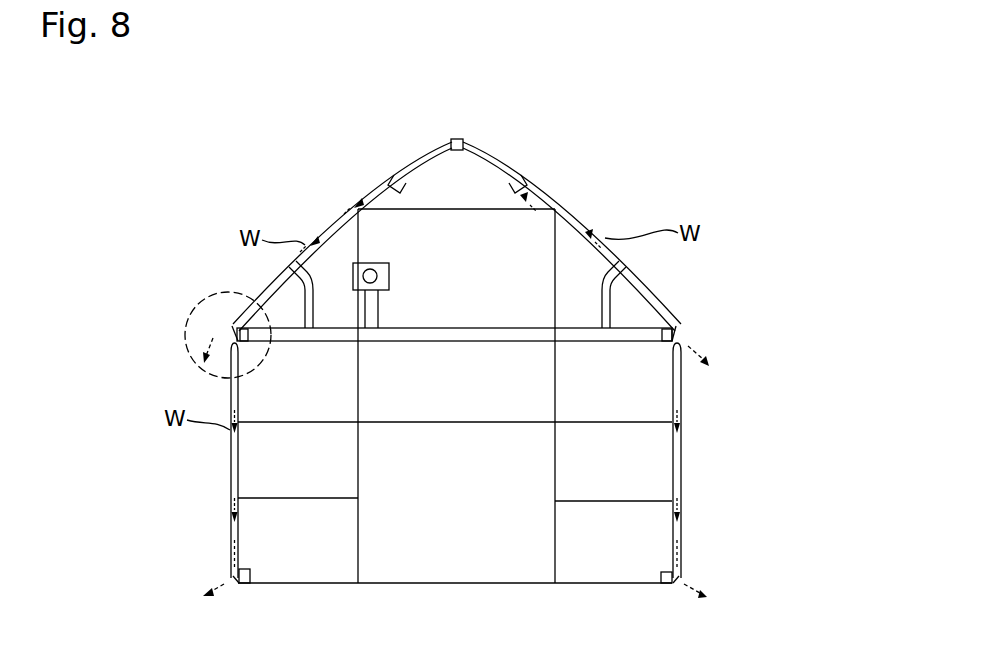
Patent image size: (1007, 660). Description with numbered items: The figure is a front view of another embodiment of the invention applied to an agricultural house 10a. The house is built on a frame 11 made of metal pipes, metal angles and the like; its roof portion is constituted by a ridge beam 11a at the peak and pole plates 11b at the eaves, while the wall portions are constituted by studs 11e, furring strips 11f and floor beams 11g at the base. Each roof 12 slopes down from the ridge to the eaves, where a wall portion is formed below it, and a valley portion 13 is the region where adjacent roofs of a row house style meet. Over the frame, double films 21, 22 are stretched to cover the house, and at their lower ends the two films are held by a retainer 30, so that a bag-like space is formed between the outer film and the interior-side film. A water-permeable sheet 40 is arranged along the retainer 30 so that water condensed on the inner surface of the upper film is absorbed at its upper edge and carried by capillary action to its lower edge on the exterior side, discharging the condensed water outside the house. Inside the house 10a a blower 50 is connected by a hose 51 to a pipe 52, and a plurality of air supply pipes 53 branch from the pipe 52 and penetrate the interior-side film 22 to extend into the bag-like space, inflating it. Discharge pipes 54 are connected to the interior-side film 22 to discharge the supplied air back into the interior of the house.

The agricultural house 10a is at (246, 205).
The frame 11 is at (539, 480).
The ridge beam 11a is at (457, 138).
The pole plate 11b is at (252, 343).
The stud 11e is at (360, 522).
The furring strip 11f is at (500, 421).
The floor beam 11g is at (253, 571).
The roof 12 is at (574, 197).
The valley portion 13 is at (696, 462).
The double film 21 is at (355, 205).
The double film 22 is at (332, 220).
The retainer 30 is at (228, 325).
The water-permeable sheet 40 is at (198, 330).
The blower 50 is at (386, 264).
The hose 51 is at (380, 308).
The pipe 52 is at (403, 342).
The air supply pipe 53 is at (318, 292).
The discharge pipe 54 is at (398, 170).